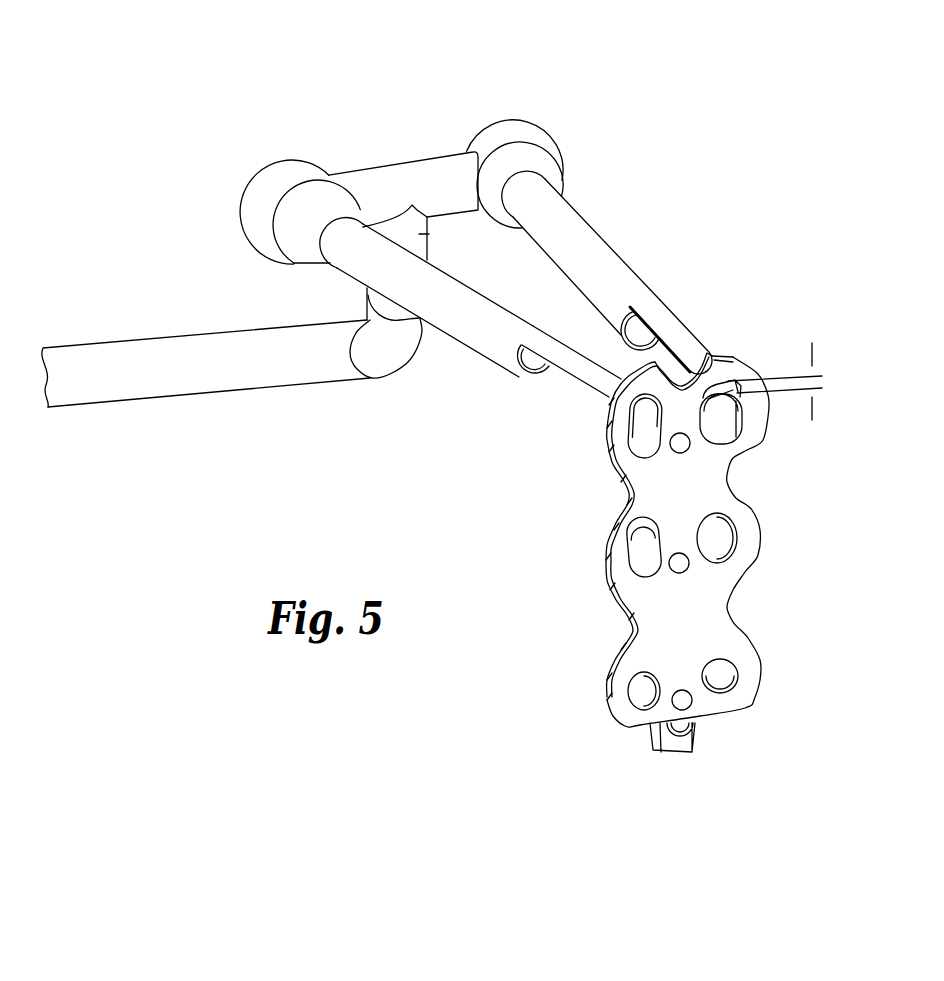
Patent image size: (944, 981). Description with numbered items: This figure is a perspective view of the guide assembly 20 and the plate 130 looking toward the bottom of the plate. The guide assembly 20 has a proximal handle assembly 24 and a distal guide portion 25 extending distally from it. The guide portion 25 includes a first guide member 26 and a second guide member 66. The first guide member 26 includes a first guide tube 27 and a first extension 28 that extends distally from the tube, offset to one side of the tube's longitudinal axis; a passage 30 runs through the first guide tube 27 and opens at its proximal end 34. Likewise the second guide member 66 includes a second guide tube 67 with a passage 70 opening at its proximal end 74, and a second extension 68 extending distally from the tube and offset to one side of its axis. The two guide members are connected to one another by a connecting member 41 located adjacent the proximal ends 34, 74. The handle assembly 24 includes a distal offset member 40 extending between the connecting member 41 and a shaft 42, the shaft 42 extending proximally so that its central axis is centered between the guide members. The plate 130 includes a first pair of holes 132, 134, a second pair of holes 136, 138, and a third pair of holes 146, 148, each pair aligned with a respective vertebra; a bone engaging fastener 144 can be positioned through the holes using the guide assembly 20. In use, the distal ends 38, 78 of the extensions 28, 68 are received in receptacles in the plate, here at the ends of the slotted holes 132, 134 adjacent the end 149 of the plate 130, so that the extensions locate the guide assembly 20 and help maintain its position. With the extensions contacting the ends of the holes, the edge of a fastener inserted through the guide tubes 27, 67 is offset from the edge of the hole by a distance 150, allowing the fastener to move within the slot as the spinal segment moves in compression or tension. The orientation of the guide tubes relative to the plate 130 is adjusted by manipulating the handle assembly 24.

The guide assembly 20 is at (232, 360).
The handle assembly 24 is at (206, 349).
The distal guide portion 25 is at (381, 136).
The first guide member 26 is at (613, 266).
The first guide tube 27 is at (627, 263).
The first extension 28 is at (677, 303).
The passage 30 is at (638, 324).
The proximal end 34 is at (530, 131).
The distal end 38 is at (720, 383).
The distal offset member 40 is at (438, 230).
The connecting member 41 is at (397, 178).
The shaft 42 is at (163, 400).
The second guide member 66 is at (470, 331).
The second guide tube 67 is at (483, 343).
The second extension 68 is at (582, 369).
The passage 70 is at (530, 357).
The proximal end 74 is at (252, 218).
The distal end 78 is at (630, 385).
The plate 130 is at (677, 544).
The hole 132 is at (751, 375).
The hole 134 is at (626, 446).
The hole 136 is at (717, 537).
The hole 138 is at (640, 540).
The fastener 144 is at (682, 774).
The hole 146 is at (643, 688).
The hole 148 is at (724, 678).
The end 149 is at (707, 353).
The distance 150 is at (775, 364).